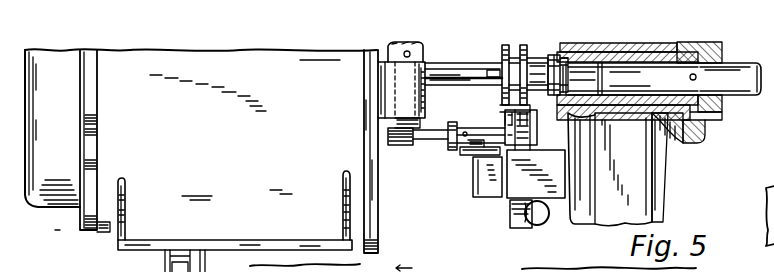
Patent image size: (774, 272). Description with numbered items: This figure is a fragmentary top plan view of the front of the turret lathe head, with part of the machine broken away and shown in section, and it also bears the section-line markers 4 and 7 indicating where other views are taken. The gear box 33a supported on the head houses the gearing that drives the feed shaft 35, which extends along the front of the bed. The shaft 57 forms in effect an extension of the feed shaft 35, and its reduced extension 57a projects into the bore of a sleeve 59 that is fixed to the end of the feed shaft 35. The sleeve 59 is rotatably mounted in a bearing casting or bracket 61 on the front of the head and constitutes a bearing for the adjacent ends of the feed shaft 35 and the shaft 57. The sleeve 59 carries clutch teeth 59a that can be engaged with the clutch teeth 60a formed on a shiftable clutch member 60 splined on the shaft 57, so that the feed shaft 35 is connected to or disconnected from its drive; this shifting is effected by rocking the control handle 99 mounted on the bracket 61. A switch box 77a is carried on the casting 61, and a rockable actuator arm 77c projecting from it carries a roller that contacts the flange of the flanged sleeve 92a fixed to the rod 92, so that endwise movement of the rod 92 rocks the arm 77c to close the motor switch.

The gear box 33a is at (766, 199).
The feed shaft 35 is at (733, 88).
The shaft 57 is at (463, 74).
The reduced extension 57a is at (603, 132).
The sleeve 59 is at (684, 42).
The clutch teeth 59a is at (577, 96).
The shiftable clutch member 60 is at (505, 46).
The clutch teeth 60a is at (540, 58).
The bearing casting or bracket 61 is at (640, 160).
The switch box 77a is at (478, 188).
The actuator arm 77c is at (473, 155).
The rod 92 is at (428, 128).
The flanged sleeve 92a is at (477, 133).
The control handle 99 is at (536, 224).
The section line 4 is at (404, 259).
The section line 7 is at (538, 261).